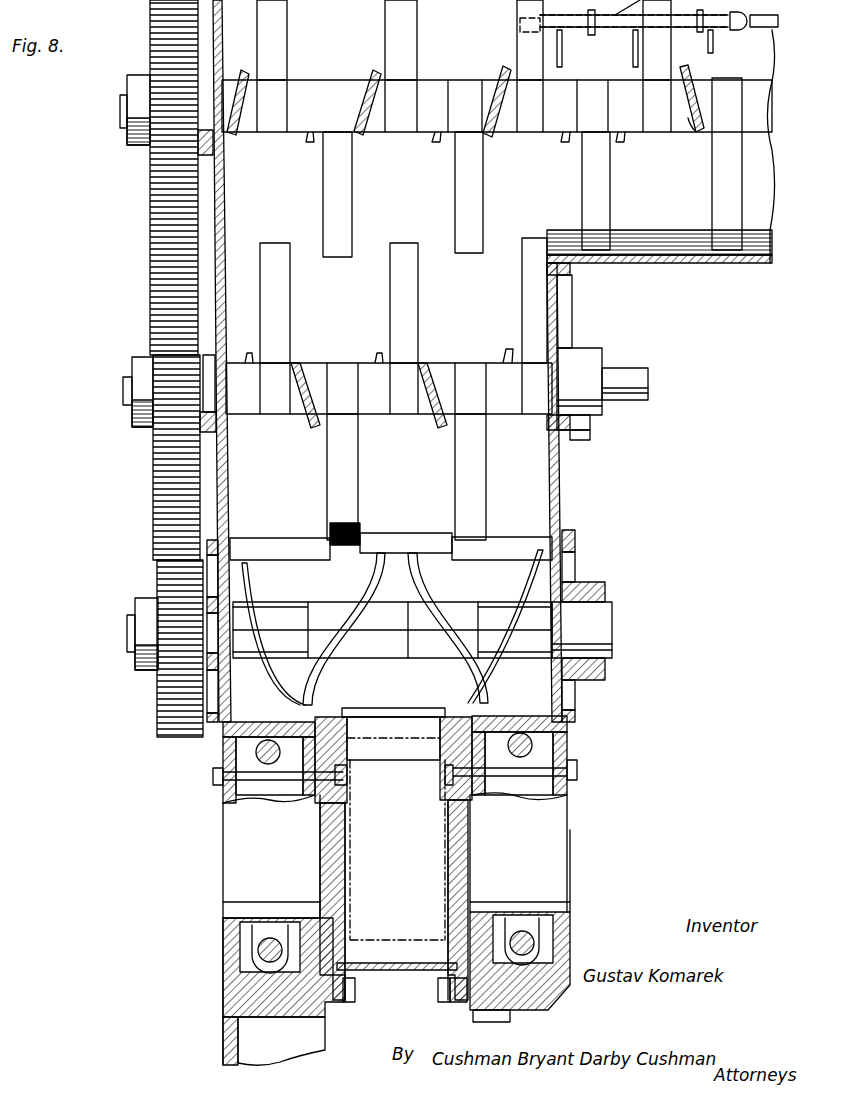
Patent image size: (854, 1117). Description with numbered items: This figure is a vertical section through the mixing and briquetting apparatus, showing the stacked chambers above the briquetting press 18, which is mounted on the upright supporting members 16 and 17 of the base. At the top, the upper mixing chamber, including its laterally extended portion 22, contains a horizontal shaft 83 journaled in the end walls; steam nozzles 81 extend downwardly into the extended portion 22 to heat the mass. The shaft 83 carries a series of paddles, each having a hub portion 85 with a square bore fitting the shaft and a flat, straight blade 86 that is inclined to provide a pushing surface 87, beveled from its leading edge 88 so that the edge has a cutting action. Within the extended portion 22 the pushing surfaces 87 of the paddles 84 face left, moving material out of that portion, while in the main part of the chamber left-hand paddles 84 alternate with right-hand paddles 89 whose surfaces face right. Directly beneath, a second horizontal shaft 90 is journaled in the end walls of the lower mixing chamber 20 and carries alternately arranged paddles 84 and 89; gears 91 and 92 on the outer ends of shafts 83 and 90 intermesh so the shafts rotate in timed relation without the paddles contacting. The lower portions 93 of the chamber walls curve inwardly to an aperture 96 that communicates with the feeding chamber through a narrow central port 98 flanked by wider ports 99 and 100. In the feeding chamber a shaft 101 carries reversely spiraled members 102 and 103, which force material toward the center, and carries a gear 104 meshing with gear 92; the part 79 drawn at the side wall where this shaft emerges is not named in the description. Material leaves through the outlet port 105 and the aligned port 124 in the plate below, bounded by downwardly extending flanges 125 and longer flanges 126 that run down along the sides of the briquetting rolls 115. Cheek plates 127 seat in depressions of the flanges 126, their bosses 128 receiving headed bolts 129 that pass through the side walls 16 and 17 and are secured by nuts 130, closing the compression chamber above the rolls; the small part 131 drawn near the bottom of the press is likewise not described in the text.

The upright supporting member 16 is at (242, 997).
The upright supporting member 17 is at (570, 923).
The briquetting press 18 is at (470, 852).
The mixing chamber 20 is at (505, 325).
The laterally extended portion 22 is at (668, 262).
The bearing flange 79 is at (553, 575).
The nozzles 81 is at (633, 45).
The horizontal shaft 83 is at (122, 115).
The paddles 84 is at (282, 54).
The hub portion 85 is at (685, 122).
The blade 86 is at (690, 75).
The pushing surface 87 is at (692, 133).
The leading edge 88 is at (232, 133).
The paddles 89 is at (310, 142).
The horizontal shaft 90 is at (126, 407).
The gear 91 is at (154, 182).
The gear 92 is at (168, 435).
The lower portions of front and rear walls 93 is at (538, 480).
The aperture 96 is at (372, 533).
The port 98 is at (410, 532).
The port 99 is at (525, 535).
The port 100 is at (283, 538).
The shaft 101 is at (128, 652).
The spirally bladed feeding and extrusion member 102 is at (340, 672).
The spirally bladed feeding and extrusion member 103 is at (496, 665).
The gear 104 is at (186, 717).
The outlet port 105 is at (381, 706).
The briquetting rolls 115 is at (427, 973).
The port 124 is at (440, 725).
The flanges 125 is at (397, 728).
The flanges 126 is at (350, 728).
The cheek plates 127 is at (347, 795).
The bosses 128 is at (448, 800).
The headed bolts 129 is at (540, 768).
The nuts 130 is at (578, 760).
The tab 131 is at (384, 970).